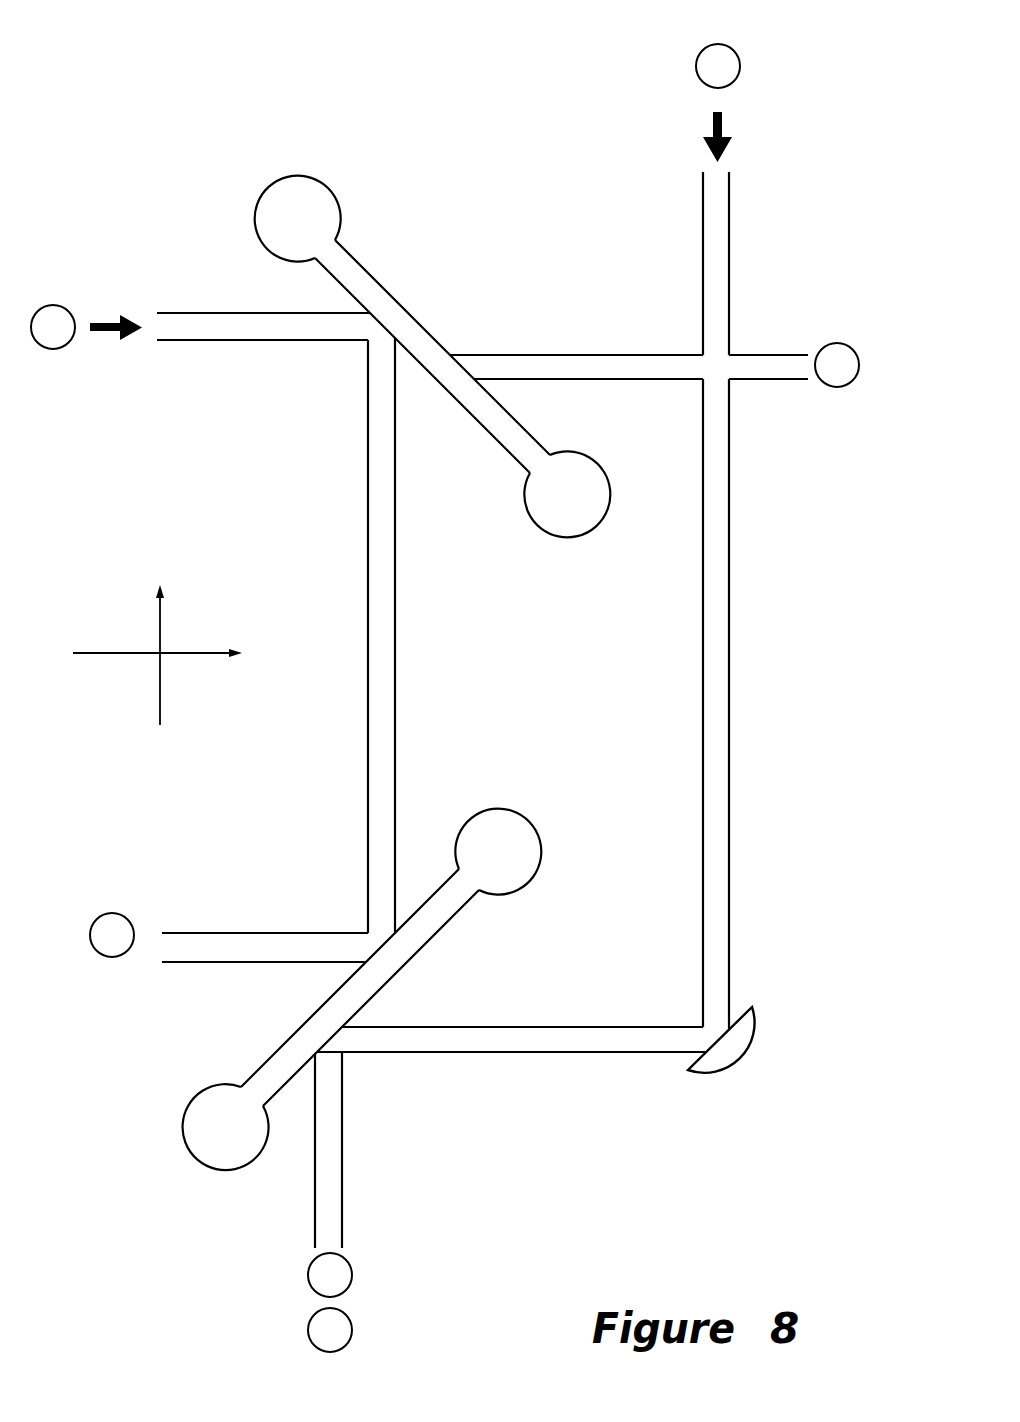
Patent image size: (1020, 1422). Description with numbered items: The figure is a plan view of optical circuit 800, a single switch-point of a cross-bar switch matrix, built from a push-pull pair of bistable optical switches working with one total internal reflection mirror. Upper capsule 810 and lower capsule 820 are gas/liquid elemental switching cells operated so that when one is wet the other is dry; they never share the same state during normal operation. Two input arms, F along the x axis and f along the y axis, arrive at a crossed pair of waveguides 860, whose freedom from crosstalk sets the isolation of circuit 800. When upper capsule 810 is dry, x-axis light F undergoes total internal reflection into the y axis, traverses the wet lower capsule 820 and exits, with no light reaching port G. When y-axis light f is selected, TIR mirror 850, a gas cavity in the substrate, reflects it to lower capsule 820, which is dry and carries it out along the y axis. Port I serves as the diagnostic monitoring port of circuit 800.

The optical circuit 800 is at (471, 39).
The upper capsule 810 is at (433, 357).
The lower capsule 820 is at (362, 990).
The TIR mirror 850 is at (715, 1075).
The crossed pair of waveguides 860 is at (730, 352).